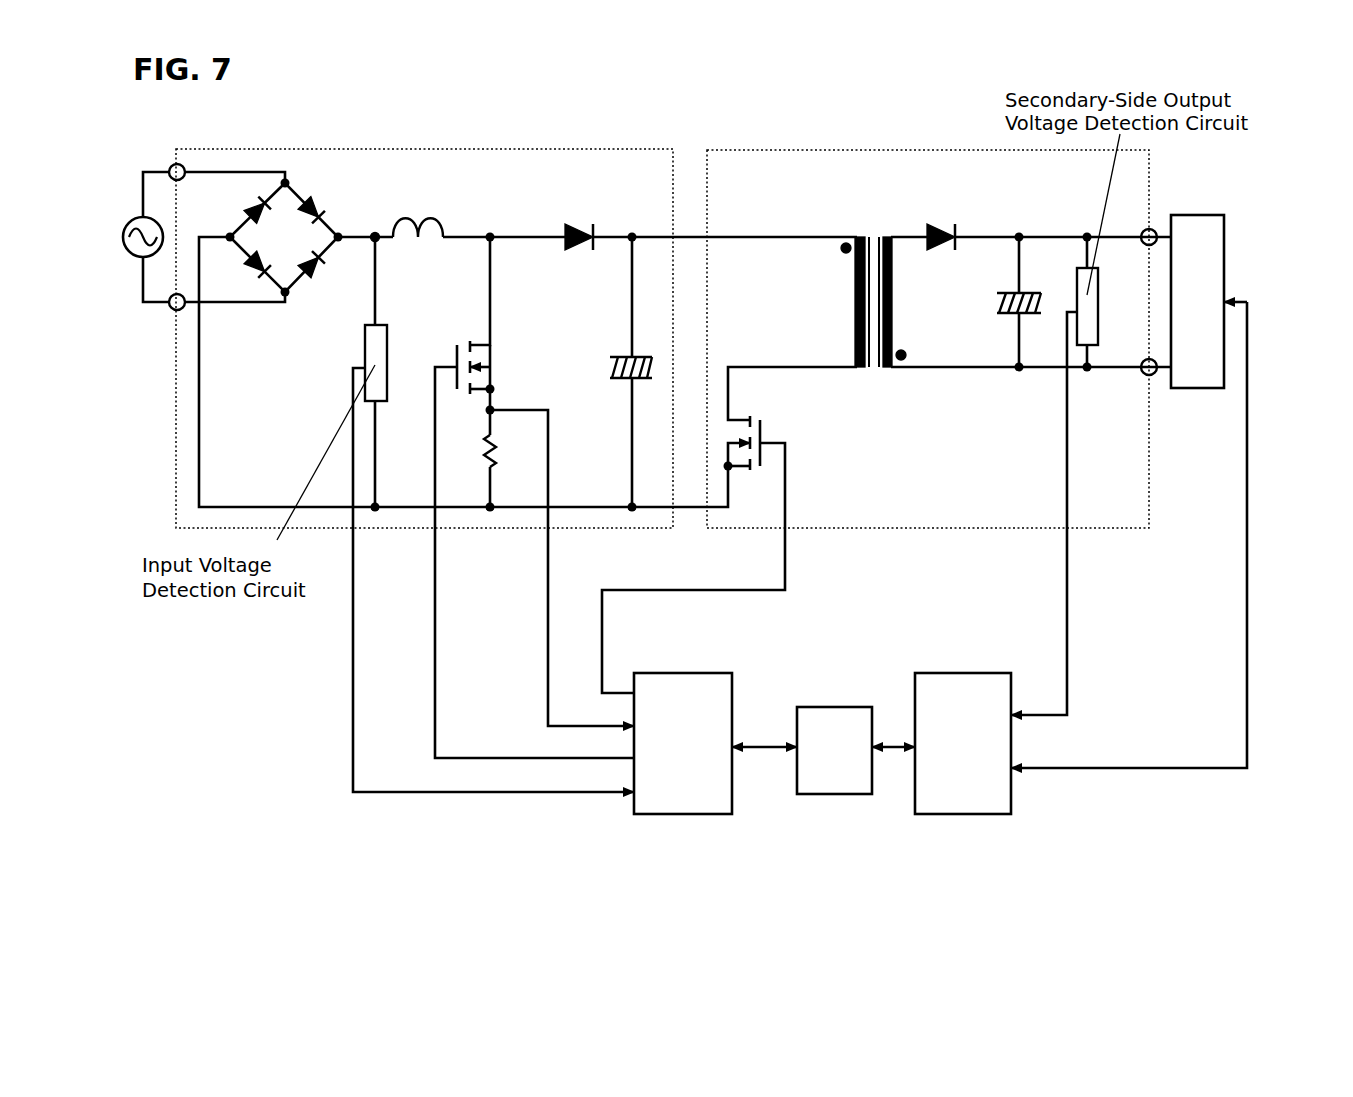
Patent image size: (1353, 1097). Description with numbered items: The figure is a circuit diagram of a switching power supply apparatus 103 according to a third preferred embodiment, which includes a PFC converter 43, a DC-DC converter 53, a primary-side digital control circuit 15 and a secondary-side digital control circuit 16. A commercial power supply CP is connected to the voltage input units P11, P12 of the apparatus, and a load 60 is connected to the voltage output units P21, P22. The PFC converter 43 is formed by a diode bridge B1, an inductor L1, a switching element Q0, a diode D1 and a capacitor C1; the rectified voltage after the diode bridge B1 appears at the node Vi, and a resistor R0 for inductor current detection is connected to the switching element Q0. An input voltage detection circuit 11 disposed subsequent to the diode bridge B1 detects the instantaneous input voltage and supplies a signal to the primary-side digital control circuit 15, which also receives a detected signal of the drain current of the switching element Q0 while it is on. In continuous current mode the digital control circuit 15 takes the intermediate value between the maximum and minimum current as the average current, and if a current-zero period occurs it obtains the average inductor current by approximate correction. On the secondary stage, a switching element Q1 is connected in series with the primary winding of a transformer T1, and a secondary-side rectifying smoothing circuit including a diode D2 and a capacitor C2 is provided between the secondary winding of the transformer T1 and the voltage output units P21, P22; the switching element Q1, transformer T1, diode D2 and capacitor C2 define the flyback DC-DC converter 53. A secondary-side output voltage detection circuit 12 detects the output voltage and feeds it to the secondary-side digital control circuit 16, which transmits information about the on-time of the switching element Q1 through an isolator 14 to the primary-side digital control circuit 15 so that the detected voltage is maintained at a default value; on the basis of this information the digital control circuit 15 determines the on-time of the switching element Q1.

The input voltage detection circuit 11 is at (388, 325).
The secondary-side output voltage detection circuit 12 is at (1100, 305).
The isolator 14 is at (838, 707).
The primary-side digital control circuit 15 is at (714, 673).
The secondary-side digital control circuit 16 is at (993, 673).
The PFC converter 43 is at (444, 149).
The DC-DC converter 53 is at (980, 150).
The load 60 is at (1200, 215).
The switching power supply apparatus 103 is at (1352, 141).
The commercial power supply CP is at (125, 237).
The voltage input unit P11 is at (172, 310).
The voltage input unit P12 is at (172, 165).
The voltage output unit P21 is at (1152, 375).
The voltage output unit P22 is at (1152, 229).
The diode bridge B1 is at (287, 232).
The inductor L1 is at (418, 212).
The switching element Q0 is at (459, 354).
The resistor R0 is at (474, 452).
The diode D1 is at (579, 219).
The capacitor C1 is at (637, 355).
The transformer T1 is at (881, 232).
The switching element Q1 is at (756, 428).
The diode D2 is at (942, 223).
The capacitor C2 is at (1023, 289).
The input voltage node Vi is at (366, 229).